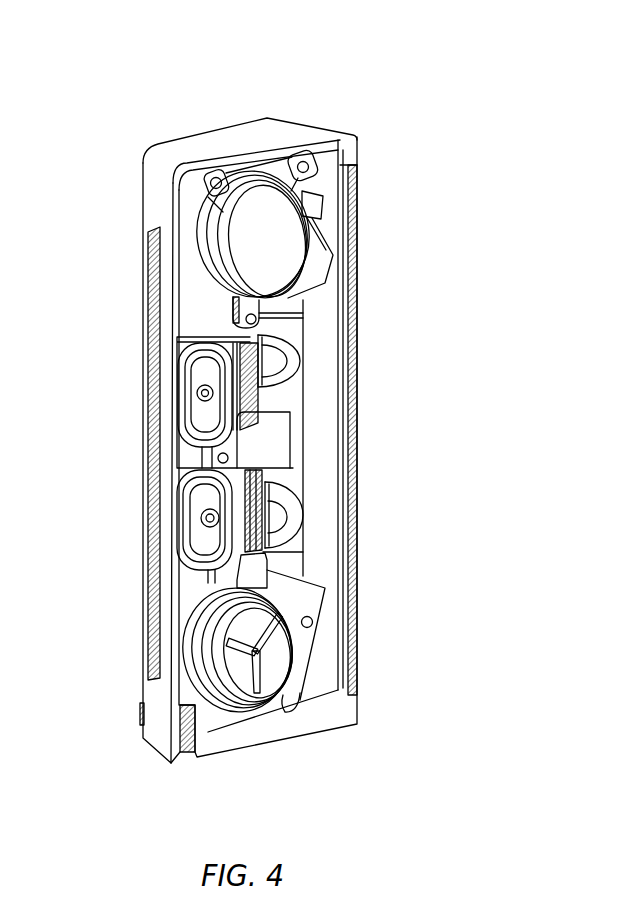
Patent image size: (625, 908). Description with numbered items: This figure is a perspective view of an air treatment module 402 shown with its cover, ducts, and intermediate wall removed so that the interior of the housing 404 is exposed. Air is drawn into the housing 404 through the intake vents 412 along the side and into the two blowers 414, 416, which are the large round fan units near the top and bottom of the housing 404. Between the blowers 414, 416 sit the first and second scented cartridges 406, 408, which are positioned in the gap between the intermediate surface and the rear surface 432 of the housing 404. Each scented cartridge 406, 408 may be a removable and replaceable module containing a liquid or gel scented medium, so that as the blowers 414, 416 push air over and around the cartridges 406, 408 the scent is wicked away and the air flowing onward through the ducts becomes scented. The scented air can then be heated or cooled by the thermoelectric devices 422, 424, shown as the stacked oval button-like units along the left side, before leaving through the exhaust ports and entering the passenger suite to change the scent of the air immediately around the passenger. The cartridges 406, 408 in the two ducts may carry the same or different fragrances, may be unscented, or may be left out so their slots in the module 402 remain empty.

The air treatment module 402 is at (363, 65).
The housing 404 is at (273, 128).
The first scented cartridge 406 is at (303, 315).
The second scented cartridge 408 is at (300, 518).
The intake vents 412 is at (148, 397).
The first blower 414 is at (288, 247).
The second blower 416 is at (276, 654).
The first thermoelectric device 422 is at (232, 338).
The second thermoelectric device 424 is at (232, 491).
The rear surface 432 is at (207, 135).